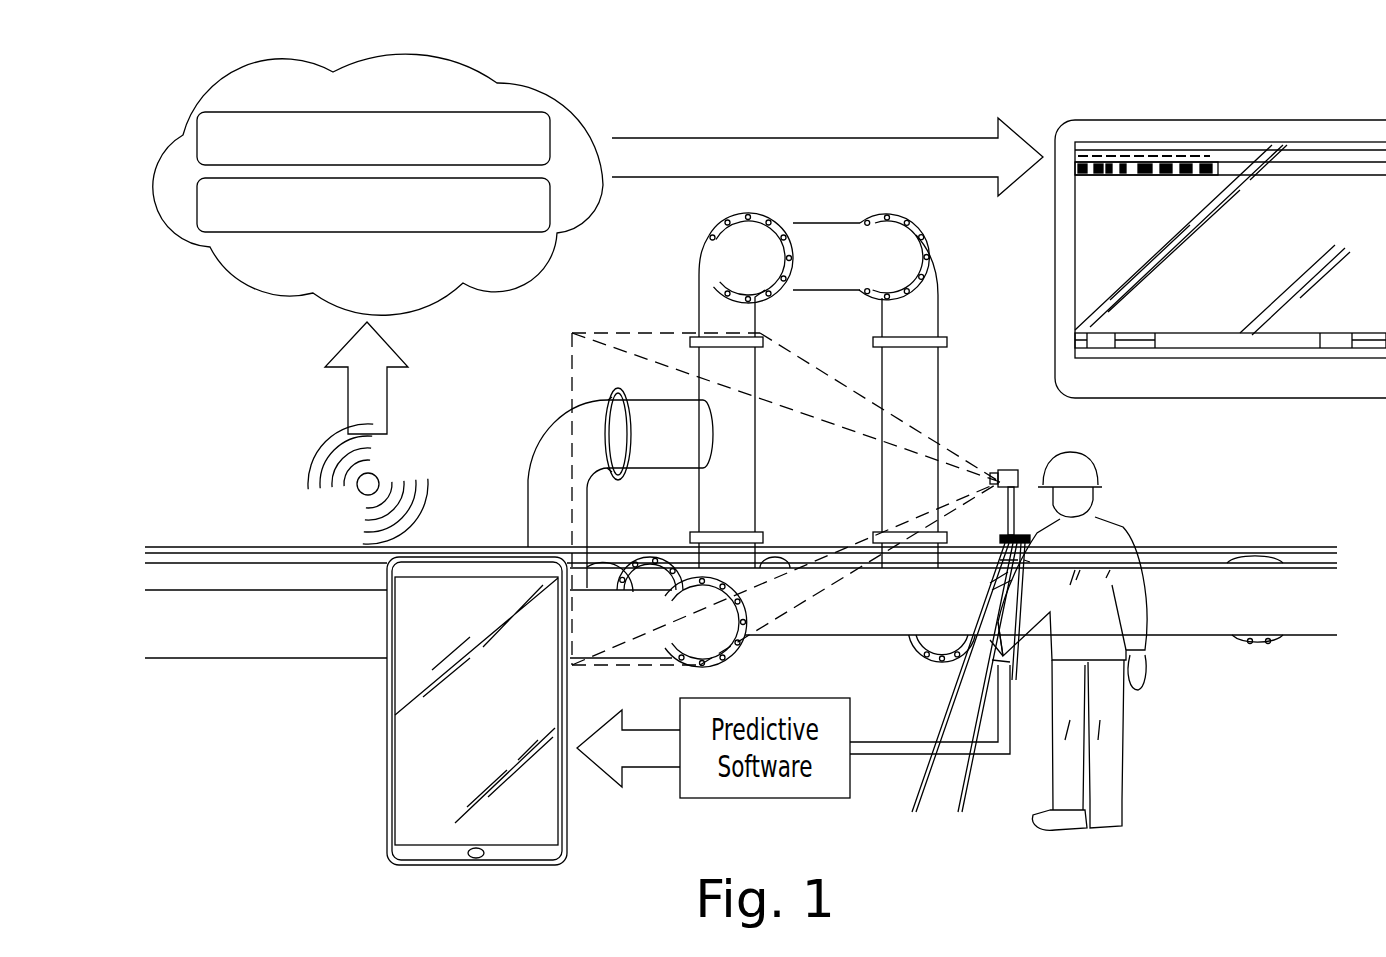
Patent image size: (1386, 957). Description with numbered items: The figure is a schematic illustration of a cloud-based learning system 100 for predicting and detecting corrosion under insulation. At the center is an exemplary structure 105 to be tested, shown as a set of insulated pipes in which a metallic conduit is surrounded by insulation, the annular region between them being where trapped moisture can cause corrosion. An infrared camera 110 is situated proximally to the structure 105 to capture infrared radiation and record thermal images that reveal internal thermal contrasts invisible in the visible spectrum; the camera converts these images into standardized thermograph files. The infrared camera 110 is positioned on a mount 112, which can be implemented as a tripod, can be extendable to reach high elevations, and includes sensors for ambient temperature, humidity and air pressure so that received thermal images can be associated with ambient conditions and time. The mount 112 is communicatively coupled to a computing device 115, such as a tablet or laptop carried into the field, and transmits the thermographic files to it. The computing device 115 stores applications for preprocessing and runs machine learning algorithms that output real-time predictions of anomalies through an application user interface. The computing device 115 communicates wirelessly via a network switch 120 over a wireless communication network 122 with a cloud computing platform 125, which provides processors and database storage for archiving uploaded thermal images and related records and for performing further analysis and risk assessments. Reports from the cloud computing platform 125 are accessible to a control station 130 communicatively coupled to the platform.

The cloud-based learning system 100 is at (851, 88).
The structure 105 is at (733, 243).
The infrared camera 110 is at (1020, 478).
The mount 112 is at (965, 793).
The computing device 115 is at (387, 758).
The network switch 120 is at (354, 485).
The wireless communication network 122 is at (388, 407).
The cloud computing platform 125 is at (350, 72).
The control station 130 is at (1220, 288).